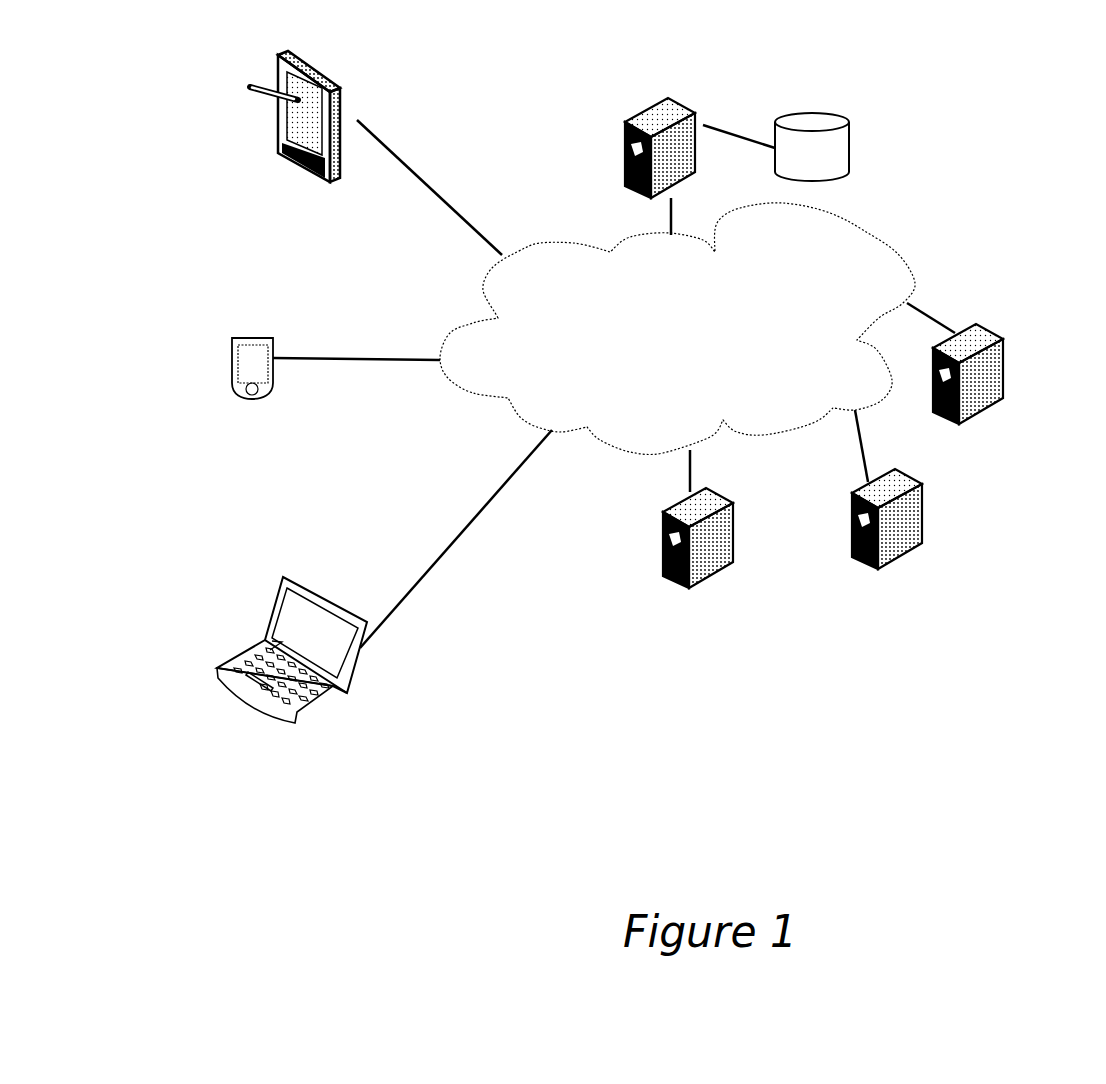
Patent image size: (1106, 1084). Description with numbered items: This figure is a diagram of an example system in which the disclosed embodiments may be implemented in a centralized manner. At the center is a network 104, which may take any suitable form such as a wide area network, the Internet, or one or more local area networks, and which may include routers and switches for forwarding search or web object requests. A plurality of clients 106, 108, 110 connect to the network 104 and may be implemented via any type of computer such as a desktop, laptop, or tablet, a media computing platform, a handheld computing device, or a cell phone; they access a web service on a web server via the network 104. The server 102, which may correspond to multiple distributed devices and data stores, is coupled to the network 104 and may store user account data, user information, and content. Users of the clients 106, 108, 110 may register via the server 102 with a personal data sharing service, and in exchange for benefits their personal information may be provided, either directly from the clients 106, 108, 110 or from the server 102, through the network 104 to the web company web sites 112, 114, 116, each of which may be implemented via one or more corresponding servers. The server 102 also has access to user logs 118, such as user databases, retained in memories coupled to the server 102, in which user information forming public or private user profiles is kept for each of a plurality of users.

The server 102 is at (692, 102).
The network 104 is at (677, 329).
The client 106 is at (242, 102).
The client 108 is at (223, 353).
The client 110 is at (243, 638).
The web company web site 112 is at (723, 493).
The web company web site 114 is at (925, 485).
The web company web site 116 is at (1000, 330).
The user log 118 is at (862, 148).